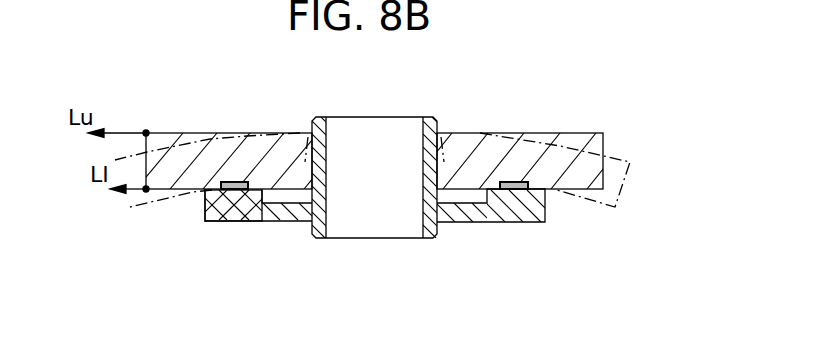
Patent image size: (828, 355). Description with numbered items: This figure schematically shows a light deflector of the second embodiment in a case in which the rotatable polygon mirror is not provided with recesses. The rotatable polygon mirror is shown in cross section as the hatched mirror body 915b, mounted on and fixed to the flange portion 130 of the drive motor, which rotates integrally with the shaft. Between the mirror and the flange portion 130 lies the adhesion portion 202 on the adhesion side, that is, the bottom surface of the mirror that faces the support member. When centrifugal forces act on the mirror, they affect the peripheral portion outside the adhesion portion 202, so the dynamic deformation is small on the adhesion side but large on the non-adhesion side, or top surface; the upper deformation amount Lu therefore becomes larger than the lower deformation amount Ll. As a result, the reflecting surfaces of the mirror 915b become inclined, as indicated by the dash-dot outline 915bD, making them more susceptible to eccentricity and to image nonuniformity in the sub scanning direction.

The plate 915b is at (175, 133).
The inclined reflecting surfaces 915bD is at (115, 160).
The adhesive pad / spacer 202 is at (230, 193).
The flange portion 130 is at (286, 222).